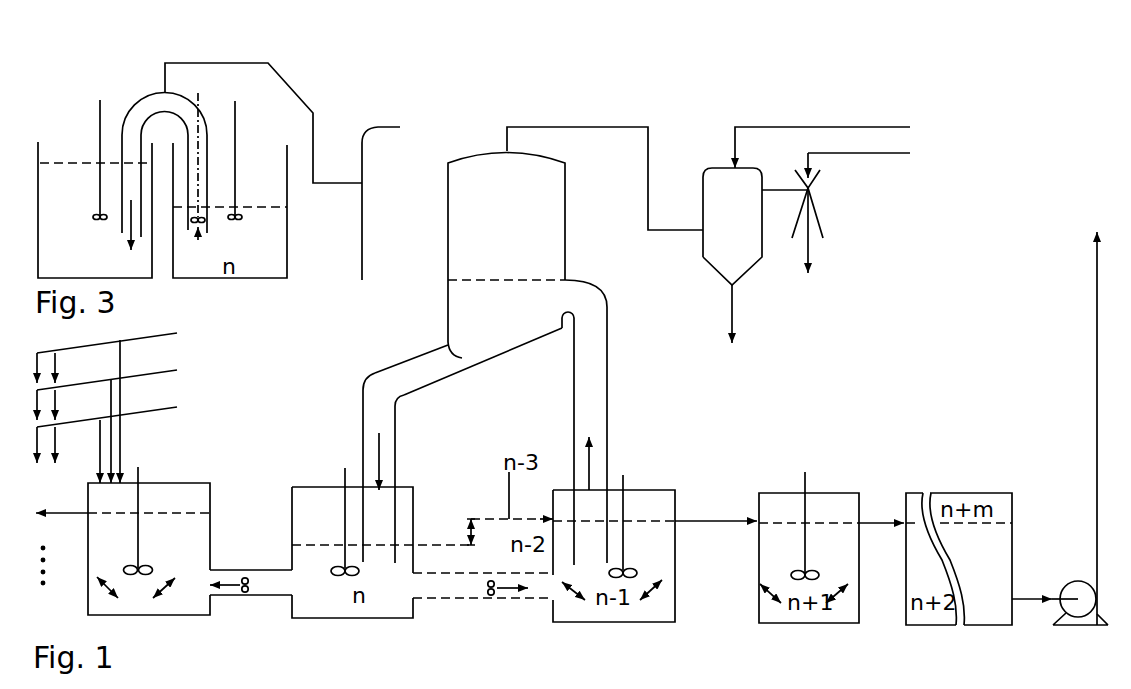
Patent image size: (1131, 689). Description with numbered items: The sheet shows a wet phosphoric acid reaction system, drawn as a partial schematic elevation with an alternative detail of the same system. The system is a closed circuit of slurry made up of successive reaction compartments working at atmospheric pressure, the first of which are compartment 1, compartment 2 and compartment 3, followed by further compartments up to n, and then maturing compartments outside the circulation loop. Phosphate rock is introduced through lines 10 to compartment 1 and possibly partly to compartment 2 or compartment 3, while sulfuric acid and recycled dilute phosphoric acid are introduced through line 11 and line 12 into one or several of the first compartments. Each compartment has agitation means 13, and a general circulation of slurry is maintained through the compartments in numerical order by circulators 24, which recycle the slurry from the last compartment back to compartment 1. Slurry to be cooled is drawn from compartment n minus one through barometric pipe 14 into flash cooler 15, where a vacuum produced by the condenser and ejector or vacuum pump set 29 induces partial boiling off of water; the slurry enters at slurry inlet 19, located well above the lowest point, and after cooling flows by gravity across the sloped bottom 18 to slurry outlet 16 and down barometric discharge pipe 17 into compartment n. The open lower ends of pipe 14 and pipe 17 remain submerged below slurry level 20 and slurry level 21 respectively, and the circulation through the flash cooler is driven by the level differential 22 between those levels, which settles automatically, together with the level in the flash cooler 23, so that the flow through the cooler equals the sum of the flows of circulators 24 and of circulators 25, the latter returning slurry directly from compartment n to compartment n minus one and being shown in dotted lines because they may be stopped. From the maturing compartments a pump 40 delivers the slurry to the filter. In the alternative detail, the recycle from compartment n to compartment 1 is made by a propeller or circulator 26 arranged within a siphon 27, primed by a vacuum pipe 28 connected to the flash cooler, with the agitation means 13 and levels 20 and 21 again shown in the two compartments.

In FIG. 3, the compartment 1 is at (101, 269).
In FIG. 1, the compartment 1 is at (147, 605).
In FIG. 1, the compartment 2 is at (60, 502).
In FIG. 1, the compartment 3 is at (40, 552).
In FIG. 1, the lines 10 is at (121, 440).
In FIG. 1, the line 11 is at (121, 421).
In FIG. 1, the line 12 is at (121, 403).
In FIG. 3, the agitation means 13 is at (161, 145).
In FIG. 1, the agitation means 13 is at (487, 511).
In FIG. 1, the barometric pipe 14 is at (590, 428).
In FIG. 3, the flash cooler 15 is at (365, 150).
In FIG. 1, the flash cooler 15 is at (516, 250).
In FIG. 1, the slurry outlet 16 is at (447, 345).
In FIG. 1, the barometric discharge pipe 17 is at (380, 425).
In FIG. 1, the bottom 18 is at (465, 370).
In FIG. 1, the slurry inlet 19 is at (560, 299).
In FIG. 3, the slurry level 20 is at (96, 153).
In FIG. 1, the slurry level 20 is at (550, 506).
In FIG. 3, the slurry level 21 is at (230, 195).
In FIG. 1, the slurry level 21 is at (381, 531).
In FIG. 1, the level differential 22 is at (468, 532).
In FIG. 1, the level in the flash cooler 23 is at (502, 277).
In FIG. 1, the circulators 24 is at (251, 597).
In FIG. 1, the circulators 25 is at (483, 600).
In FIG. 3, the propeller or circulator 26 is at (201, 236).
In FIG. 3, the siphon 27 is at (160, 93).
In FIG. 3, the vacuum pipe 28 is at (296, 89).
In FIG. 1, the set of condenser-steam jet ejector or condenser-vacuum pump 29 is at (844, 218).
In FIG. 1, the pump 40 is at (1061, 445).